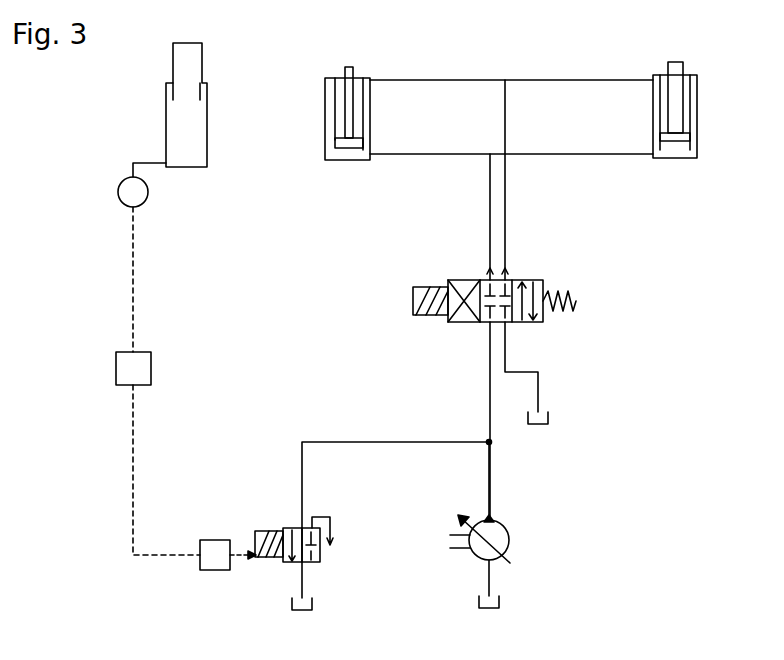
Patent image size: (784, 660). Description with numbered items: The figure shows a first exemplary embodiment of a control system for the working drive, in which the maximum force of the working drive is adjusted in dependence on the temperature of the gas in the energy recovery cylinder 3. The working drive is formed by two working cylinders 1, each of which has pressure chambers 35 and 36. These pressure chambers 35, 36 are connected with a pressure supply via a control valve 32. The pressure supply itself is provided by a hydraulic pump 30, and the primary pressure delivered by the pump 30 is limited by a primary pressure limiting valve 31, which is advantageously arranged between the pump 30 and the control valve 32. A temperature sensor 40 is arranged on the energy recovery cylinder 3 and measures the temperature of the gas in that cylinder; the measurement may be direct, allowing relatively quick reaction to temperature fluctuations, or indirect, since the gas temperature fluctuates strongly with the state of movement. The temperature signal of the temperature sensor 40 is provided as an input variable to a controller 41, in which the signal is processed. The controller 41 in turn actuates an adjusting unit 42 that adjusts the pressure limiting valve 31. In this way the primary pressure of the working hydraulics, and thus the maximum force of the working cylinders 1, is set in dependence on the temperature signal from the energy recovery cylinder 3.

The working cylinder 1 is at (542, 113).
The energy recovery cylinder 3 is at (209, 138).
The hydraulic pump 30 is at (522, 535).
The primary pressure limiting valve 31 is at (322, 557).
The control valve 32 is at (550, 322).
The pressure chamber 35 is at (685, 158).
The pressure chamber 36 is at (714, 92).
The temperature sensor 40 is at (118, 207).
The controller 41 is at (152, 363).
The adjusting unit 42 is at (213, 573).